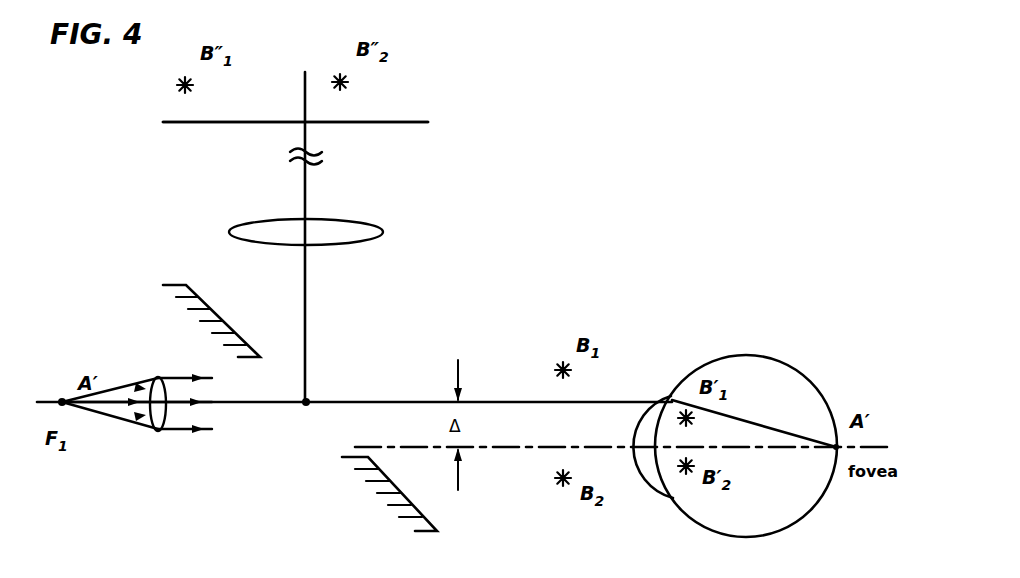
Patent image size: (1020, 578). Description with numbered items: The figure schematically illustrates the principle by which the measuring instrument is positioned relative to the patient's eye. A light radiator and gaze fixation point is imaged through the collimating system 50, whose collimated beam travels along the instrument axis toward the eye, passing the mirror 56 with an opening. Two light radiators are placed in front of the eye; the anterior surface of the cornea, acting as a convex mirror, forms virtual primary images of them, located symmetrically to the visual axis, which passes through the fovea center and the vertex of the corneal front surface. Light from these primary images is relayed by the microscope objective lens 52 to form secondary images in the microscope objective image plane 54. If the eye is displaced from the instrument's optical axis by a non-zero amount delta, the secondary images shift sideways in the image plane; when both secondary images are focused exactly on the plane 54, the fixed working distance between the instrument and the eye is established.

The collimating system 50 is at (158, 378).
The microscope objective lens 52 is at (258, 228).
The microscope objective image plane 54 is at (392, 122).
The mirror with an opening 56 is at (205, 298).